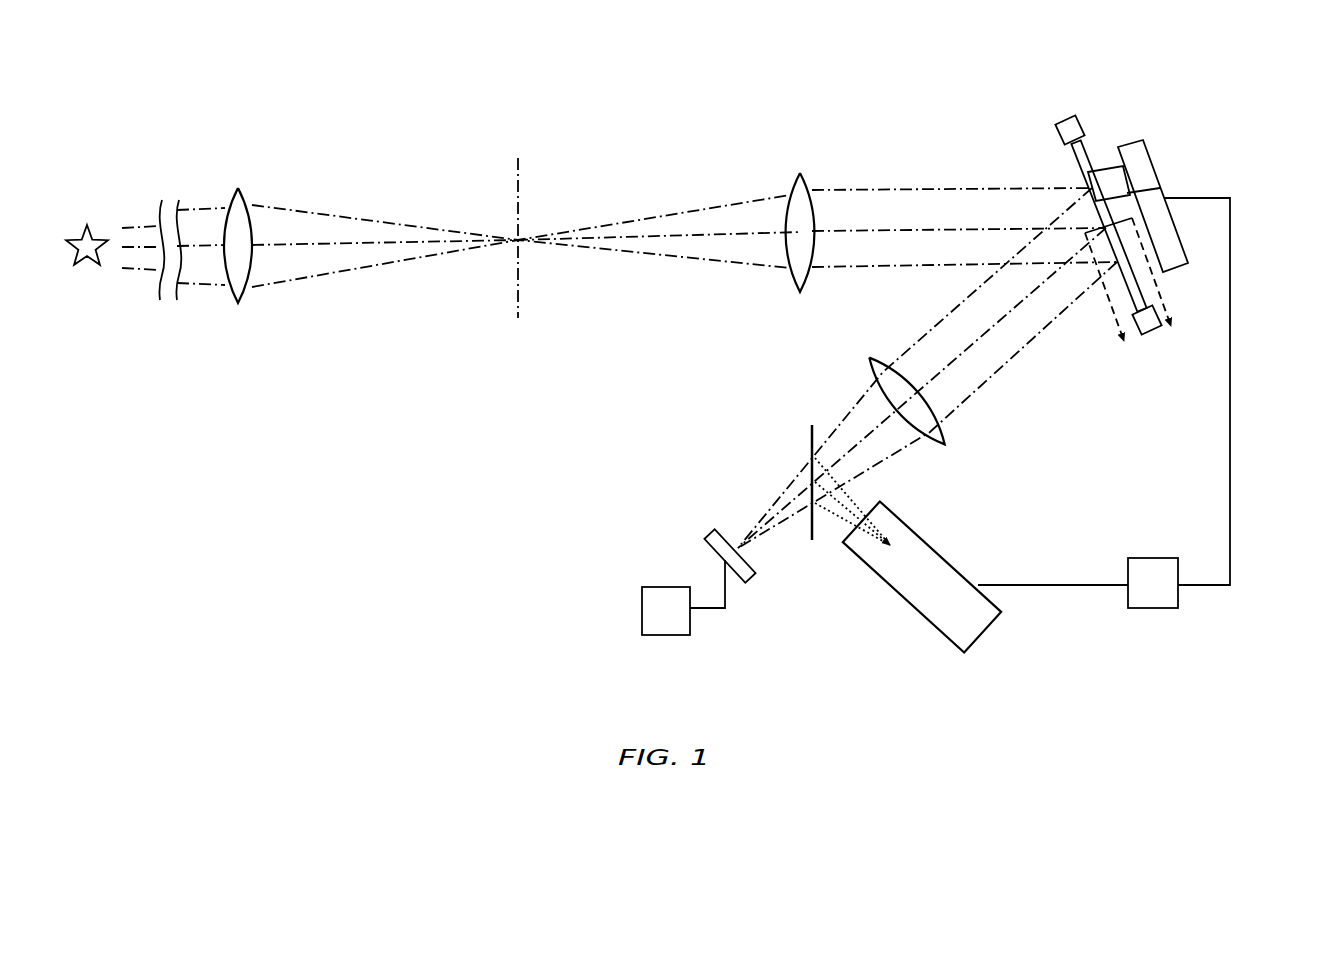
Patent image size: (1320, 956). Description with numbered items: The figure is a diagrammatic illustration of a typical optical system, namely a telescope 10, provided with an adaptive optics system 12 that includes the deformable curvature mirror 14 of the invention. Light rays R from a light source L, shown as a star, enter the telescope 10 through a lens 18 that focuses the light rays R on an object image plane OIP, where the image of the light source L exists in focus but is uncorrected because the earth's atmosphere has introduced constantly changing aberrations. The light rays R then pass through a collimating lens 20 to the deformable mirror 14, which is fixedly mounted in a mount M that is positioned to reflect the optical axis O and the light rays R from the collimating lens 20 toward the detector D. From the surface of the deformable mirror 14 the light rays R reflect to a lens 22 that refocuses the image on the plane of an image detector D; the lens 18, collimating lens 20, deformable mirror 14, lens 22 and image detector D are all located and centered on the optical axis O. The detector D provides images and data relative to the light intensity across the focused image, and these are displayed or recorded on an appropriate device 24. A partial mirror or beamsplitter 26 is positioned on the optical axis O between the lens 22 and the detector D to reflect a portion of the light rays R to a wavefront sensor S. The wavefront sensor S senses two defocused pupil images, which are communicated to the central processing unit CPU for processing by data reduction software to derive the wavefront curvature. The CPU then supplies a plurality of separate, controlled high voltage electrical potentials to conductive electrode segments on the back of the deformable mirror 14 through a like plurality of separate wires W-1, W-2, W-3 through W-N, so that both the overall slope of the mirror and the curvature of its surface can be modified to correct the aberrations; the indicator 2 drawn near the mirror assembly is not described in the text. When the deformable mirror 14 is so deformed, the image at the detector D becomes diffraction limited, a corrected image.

The telescope 10 is at (456, 176).
The adaptive optics system 12 is at (860, 338).
The deformable curvature mirror 14 is at (1026, 160).
The lens 18 is at (240, 190).
The collimating lens 20 is at (793, 186).
The lens 22 is at (950, 432).
The device 24 is at (665, 640).
The partial mirror or beamsplitter 26 is at (808, 440).
The light source L is at (85, 198).
The light rays R is at (278, 280).
The optical axis O is at (343, 243).
The object image plane OIP is at (520, 168).
The mount M is at (1070, 118).
The wire W-1 is at (1097, 172).
The wire W-2 is at (1135, 152).
The wire W-3 is at (1140, 197).
The wire W-N is at (1136, 236).
The filter travel direction 2 is at (1133, 297).
The image detector D is at (710, 534).
The wavefront sensor S is at (943, 550).
The central processing unit CPU is at (1154, 583).